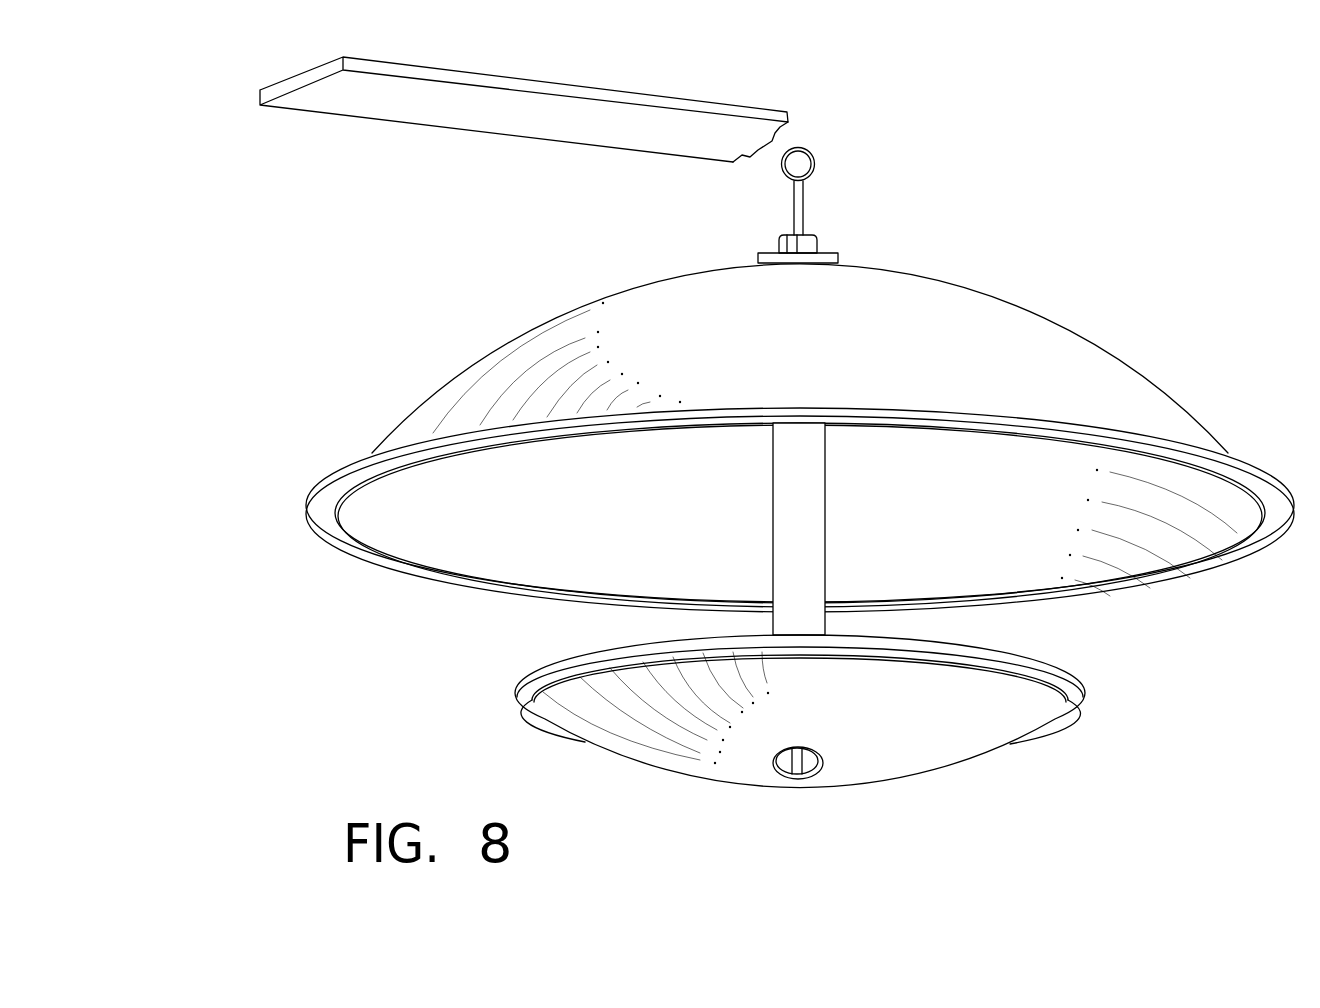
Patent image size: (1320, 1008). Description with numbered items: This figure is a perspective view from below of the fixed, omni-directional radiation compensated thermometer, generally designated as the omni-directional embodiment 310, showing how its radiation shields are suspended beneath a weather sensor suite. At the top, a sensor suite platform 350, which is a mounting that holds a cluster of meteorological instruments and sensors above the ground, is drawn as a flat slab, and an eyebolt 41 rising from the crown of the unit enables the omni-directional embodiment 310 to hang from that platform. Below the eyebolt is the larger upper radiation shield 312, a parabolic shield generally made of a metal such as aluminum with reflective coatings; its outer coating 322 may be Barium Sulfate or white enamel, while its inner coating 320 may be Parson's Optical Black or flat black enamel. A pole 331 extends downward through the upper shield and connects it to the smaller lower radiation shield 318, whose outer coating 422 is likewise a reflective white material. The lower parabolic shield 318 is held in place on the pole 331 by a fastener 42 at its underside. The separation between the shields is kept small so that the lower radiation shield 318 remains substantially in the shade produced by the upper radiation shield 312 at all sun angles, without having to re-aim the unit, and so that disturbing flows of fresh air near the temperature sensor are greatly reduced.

The omni-directional embodiment 310 is at (777, 438).
The sensor suite platform 350 is at (610, 118).
The eyebolt 41 is at (815, 160).
The upper radiation shield 312 is at (800, 388).
The outer coating 322 is at (815, 317).
The inner coating 320 is at (552, 520).
The pole 331 is at (800, 495).
The lower radiation shield 318 is at (737, 717).
The outer coating 422 is at (933, 724).
The fastener 42 is at (803, 769).